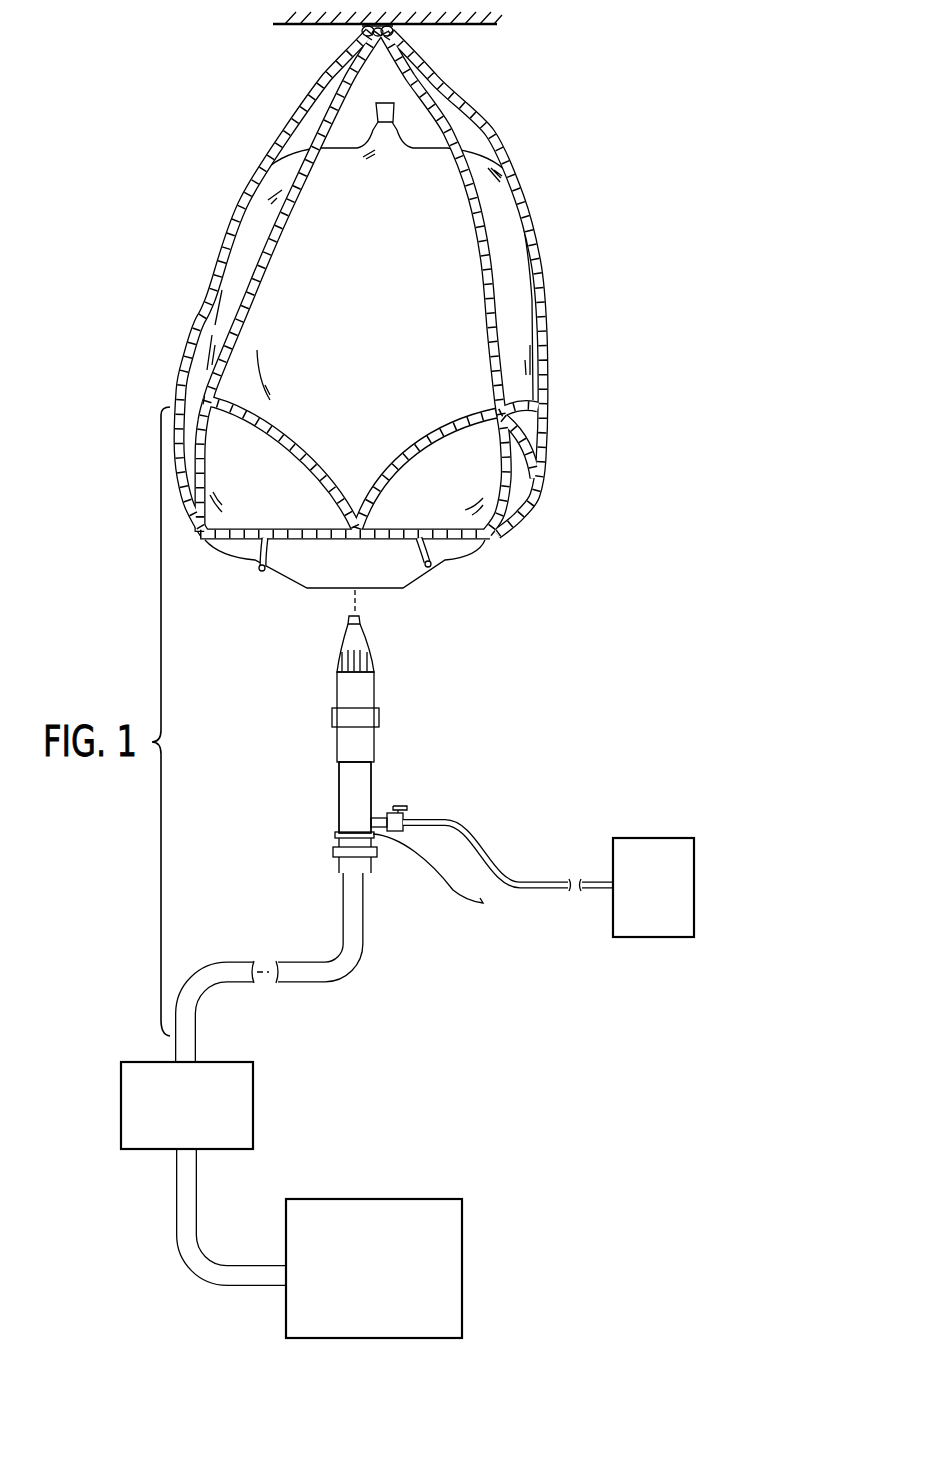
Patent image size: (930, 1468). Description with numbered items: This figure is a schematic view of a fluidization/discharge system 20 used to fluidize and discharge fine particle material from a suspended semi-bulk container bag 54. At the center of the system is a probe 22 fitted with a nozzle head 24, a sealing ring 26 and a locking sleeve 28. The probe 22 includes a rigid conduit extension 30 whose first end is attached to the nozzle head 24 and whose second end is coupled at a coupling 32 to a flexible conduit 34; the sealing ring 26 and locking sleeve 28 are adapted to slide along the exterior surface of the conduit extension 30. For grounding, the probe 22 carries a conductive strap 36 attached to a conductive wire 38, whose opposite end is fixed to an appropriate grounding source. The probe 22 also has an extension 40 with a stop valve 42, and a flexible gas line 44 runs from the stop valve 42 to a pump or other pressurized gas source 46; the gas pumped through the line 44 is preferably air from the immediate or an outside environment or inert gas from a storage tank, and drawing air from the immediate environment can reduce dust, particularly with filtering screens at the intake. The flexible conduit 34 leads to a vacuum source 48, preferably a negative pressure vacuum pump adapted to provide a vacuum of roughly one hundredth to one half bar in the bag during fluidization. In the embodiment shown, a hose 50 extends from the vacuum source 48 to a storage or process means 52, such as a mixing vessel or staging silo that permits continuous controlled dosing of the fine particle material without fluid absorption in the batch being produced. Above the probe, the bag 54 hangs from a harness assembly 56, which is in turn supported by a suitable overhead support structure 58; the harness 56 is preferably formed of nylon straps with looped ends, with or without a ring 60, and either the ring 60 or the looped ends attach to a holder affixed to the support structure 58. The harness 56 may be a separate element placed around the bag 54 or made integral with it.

The fluidization/discharge system 20 is at (392, 748).
The probe 22 is at (348, 780).
The nozzle head 24 is at (372, 668).
The sealing ring 26 is at (376, 717).
The locking sleeve 28 is at (342, 742).
The rigid conduit extension 30 is at (364, 794).
The coupling 32 is at (345, 863).
The flexible conduit 34 is at (340, 960).
The conductive strap 36 is at (337, 834).
The conductive wire 38 is at (453, 891).
The extension 40 is at (376, 813).
The stop valve 42 is at (403, 815).
The flexible gas line 44 is at (490, 858).
The pump or pressurized gas source 46 is at (667, 904).
The vacuum source 48 is at (200, 1113).
The hose 50 is at (193, 1258).
The storage or process means 52 is at (380, 1282).
The semi-bulk container bag 54 is at (387, 363).
The harness assembly 56 is at (538, 283).
The overhead support structure 58 is at (497, 20).
The ring 60 is at (335, 62).